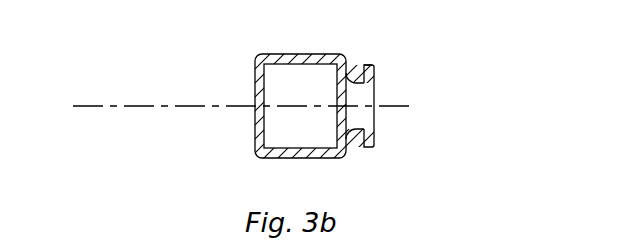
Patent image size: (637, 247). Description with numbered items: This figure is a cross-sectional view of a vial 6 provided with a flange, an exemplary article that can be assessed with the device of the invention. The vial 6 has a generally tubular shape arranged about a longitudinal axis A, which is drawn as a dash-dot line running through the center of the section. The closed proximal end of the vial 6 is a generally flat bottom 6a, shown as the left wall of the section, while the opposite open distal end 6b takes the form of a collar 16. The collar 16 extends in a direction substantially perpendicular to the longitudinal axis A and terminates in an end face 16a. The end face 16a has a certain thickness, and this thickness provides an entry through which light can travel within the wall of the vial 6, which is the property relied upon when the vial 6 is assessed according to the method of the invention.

The longitudinal axis A is at (100, 105).
The vial 6 is at (331, 106).
The bottom 6a is at (254, 79).
The open distal end 6b is at (404, 79).
The collar 16 is at (378, 150).
The end face 16a is at (369, 65).